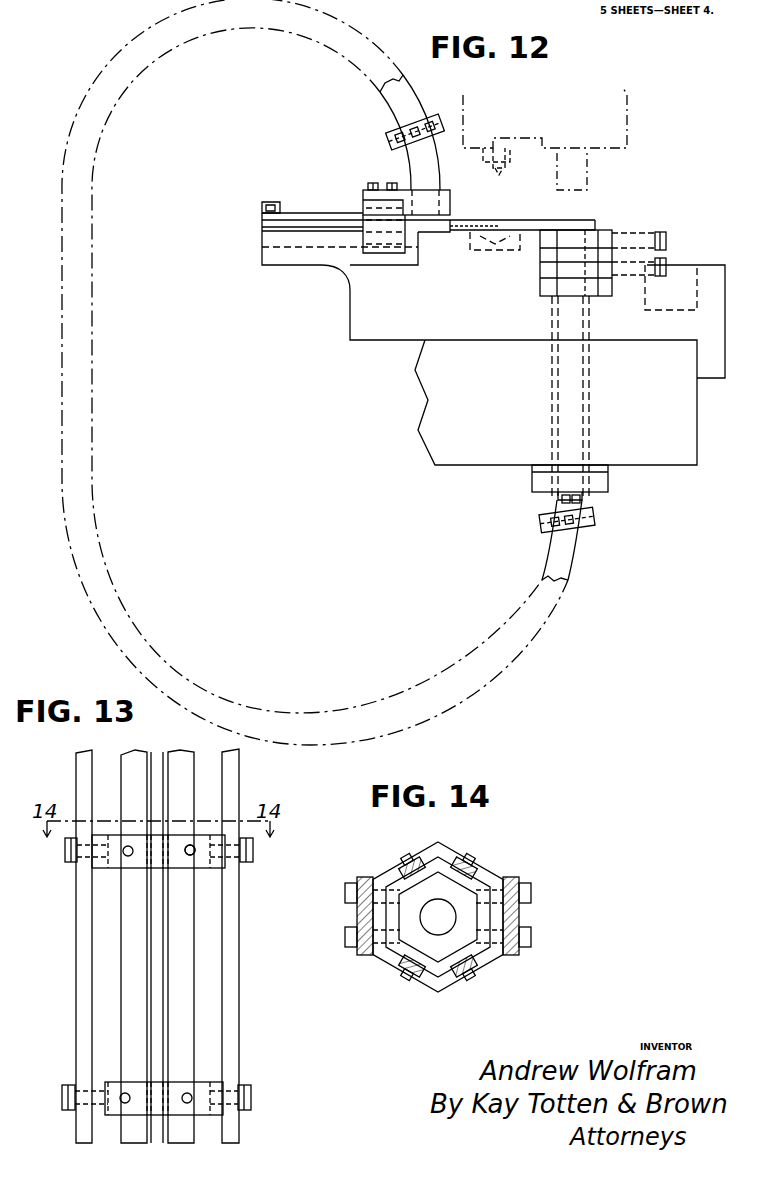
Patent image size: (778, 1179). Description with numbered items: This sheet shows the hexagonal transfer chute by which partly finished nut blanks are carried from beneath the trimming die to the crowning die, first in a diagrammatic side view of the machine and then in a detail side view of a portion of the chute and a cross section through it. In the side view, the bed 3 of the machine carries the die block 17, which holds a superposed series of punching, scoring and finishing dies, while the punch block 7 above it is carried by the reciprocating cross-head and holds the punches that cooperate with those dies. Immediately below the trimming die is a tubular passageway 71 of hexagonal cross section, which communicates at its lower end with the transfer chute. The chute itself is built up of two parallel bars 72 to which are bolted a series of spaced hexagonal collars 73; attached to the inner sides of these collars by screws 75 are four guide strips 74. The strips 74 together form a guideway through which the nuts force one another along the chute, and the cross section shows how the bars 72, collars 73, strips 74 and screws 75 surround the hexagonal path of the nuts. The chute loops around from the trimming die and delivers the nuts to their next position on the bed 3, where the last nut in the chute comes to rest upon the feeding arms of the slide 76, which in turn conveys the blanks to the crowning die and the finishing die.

In FIG. 12, the bed 3 is at (362, 305).
In FIG. 12, the punch block 7 is at (618, 122).
In FIG. 12, the die block 17 is at (597, 232).
In FIG. 12, the tubular passageway 71 is at (586, 392).
In FIG. 12, the parallel bars 72 is at (92, 410).
In FIG. 13, the parallel bars 72 is at (80, 963).
In FIG. 14, the parallel bars 72 is at (357, 917).
In FIG. 13, the hexagonal collars 73 is at (118, 862).
In FIG. 14, the hexagonal collars 73 is at (490, 880).
In FIG. 12, the guide strips 74 is at (572, 574).
In FIG. 13, the guide strips 74 is at (140, 1008).
In FIG. 14, the guide strips 74 is at (432, 856).
In FIG. 13, the screws 75 is at (189, 853).
In FIG. 14, the screws 75 is at (462, 863).
In FIG. 12, the slide 76 is at (330, 223).